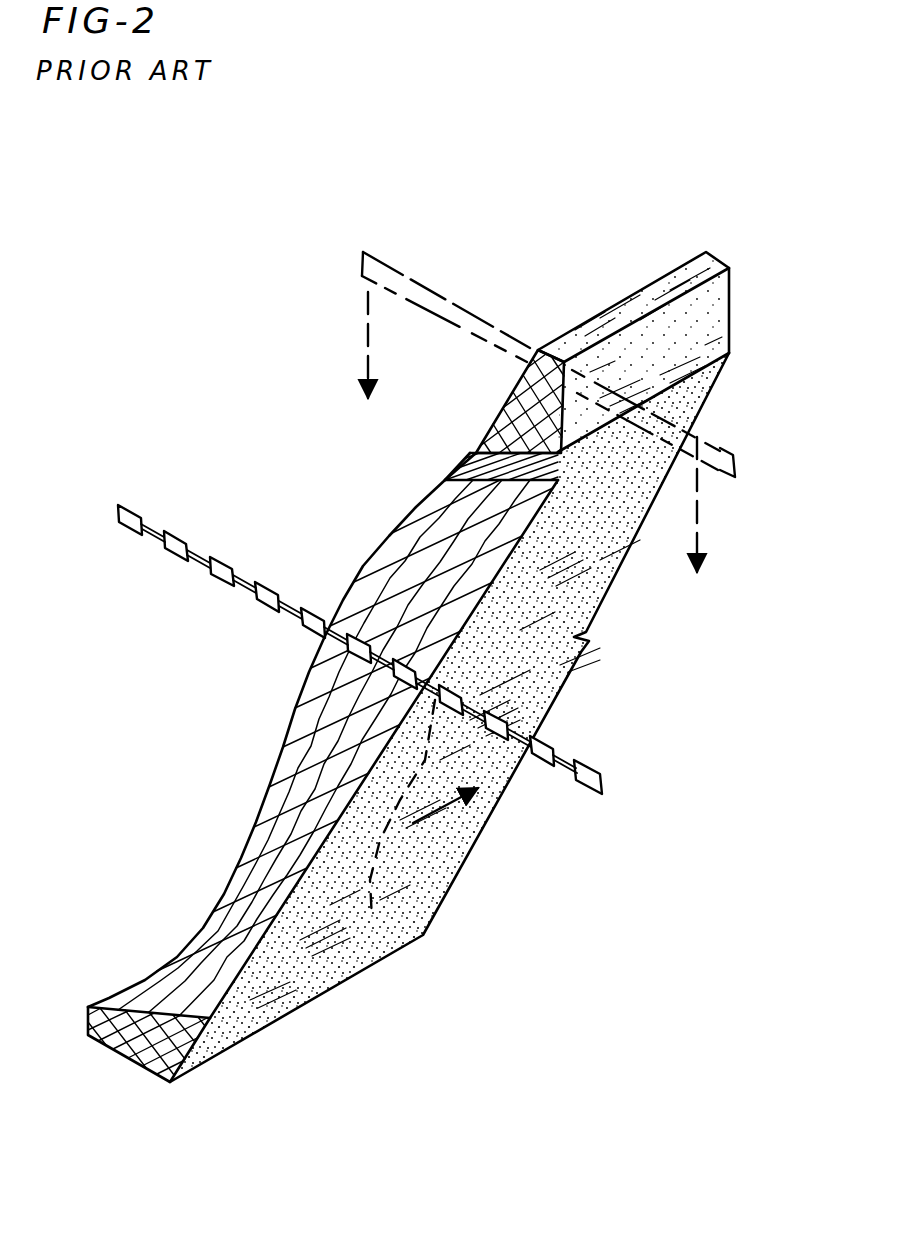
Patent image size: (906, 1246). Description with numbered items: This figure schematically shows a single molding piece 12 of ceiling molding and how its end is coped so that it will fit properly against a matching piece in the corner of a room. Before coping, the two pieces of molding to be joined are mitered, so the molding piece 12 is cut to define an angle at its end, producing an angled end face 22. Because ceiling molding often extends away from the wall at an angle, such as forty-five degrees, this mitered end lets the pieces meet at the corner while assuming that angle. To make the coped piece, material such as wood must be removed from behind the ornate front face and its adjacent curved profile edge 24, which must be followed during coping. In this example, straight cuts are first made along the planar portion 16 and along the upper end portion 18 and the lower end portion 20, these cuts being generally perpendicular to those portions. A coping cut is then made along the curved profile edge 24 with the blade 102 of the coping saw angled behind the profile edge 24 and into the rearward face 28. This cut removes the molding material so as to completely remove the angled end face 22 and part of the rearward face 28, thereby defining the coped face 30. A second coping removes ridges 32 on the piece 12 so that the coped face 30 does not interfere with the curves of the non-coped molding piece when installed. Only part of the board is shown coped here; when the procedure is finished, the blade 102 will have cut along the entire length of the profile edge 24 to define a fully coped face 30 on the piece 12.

The molding piece 12 is at (238, 403).
The planar portion 16 is at (446, 469).
The upper end portion 18 is at (526, 371).
The lower end portion 20 is at (82, 1007).
The angled end face 22 is at (424, 559).
The curved profile edge 24 is at (392, 527).
The rearward face 28 is at (533, 670).
The coped face 30 is at (333, 737).
The ridges 32 is at (528, 351).
The blade 102 is at (363, 252).